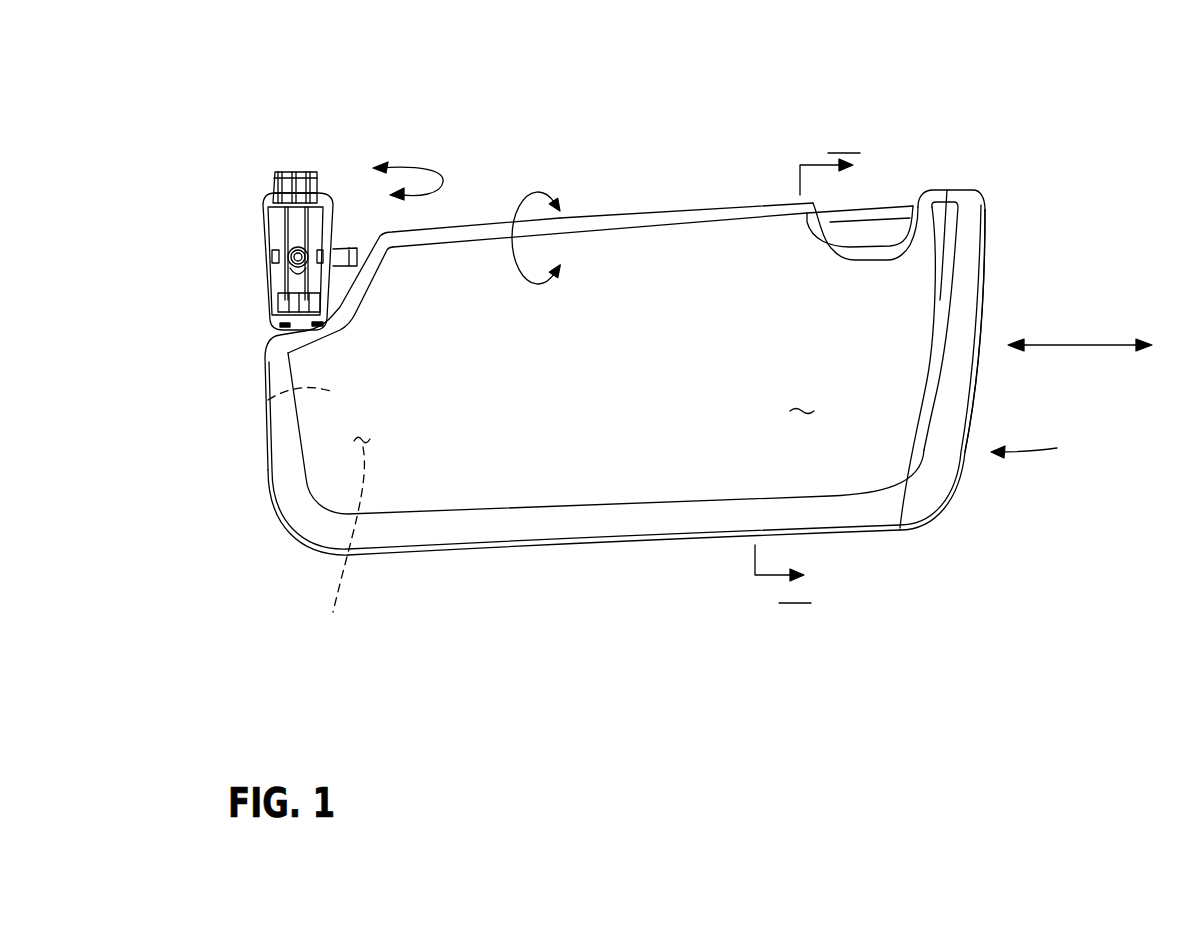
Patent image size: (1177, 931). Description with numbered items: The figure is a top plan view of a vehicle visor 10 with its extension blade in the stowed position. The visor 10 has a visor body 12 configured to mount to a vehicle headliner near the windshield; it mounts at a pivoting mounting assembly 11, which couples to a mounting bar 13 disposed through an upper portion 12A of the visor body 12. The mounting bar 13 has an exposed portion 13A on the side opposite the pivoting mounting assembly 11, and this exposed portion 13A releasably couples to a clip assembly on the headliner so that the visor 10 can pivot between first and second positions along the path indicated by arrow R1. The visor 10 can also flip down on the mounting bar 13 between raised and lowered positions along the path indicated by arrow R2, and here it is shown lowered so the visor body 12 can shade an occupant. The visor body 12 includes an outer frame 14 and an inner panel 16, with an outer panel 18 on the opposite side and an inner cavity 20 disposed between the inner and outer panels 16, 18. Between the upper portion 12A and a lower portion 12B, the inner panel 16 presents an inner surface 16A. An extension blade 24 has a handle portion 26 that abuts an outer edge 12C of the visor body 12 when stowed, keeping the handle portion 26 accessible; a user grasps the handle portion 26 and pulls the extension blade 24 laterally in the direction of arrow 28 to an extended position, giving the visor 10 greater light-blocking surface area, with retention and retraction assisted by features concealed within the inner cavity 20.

The vehicle visor 10 is at (796, 114).
The pivoting mounting assembly 11 is at (338, 164).
The visor body 12 is at (671, 553).
The upper portion 12A is at (650, 213).
The lower portion 12B is at (738, 540).
The outer edge 12C is at (918, 408).
The mounting bar 13 is at (336, 250).
The exposed portion 13A is at (876, 210).
The outer frame 14 is at (578, 523).
The inner panel 16 is at (323, 445).
The inner surface 16A is at (805, 400).
The outer panel 18 is at (265, 396).
The inner cavity 20 is at (347, 538).
The extension blade 24 is at (1038, 448).
The handle portion 26 is at (964, 290).
The arrow (lateral direction) 28 is at (1062, 343).
The arrow (pivot path) R1 is at (440, 183).
The arrow (flip-down path) R2 is at (512, 222).